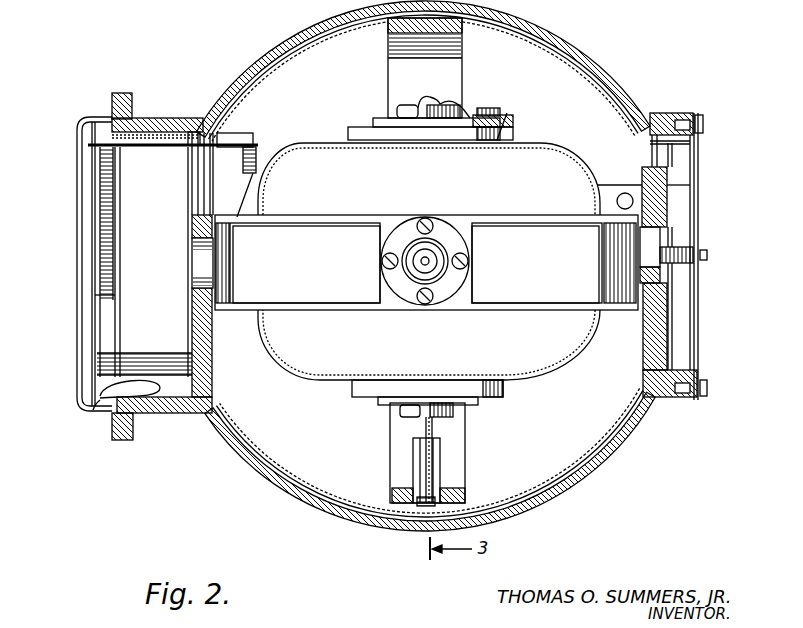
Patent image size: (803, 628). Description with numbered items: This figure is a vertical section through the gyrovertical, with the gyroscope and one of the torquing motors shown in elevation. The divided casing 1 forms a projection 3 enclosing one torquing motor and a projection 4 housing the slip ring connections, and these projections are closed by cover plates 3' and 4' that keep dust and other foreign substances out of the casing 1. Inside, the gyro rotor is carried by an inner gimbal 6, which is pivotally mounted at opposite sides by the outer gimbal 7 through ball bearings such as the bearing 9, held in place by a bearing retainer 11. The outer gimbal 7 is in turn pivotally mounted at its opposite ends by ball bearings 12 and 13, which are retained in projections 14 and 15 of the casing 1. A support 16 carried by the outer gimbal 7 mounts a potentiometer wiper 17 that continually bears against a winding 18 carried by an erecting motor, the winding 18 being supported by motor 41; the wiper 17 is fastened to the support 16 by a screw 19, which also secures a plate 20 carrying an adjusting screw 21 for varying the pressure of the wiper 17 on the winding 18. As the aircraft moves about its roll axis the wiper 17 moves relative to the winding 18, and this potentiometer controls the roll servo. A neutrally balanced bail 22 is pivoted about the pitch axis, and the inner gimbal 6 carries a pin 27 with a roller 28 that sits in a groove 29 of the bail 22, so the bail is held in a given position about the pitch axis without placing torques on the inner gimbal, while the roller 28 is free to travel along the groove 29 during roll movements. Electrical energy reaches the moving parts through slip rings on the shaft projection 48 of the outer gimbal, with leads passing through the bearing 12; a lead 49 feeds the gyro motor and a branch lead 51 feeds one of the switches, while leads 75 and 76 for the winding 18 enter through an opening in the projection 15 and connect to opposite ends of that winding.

The divided casing 1 is at (548, 24).
The projection 3 is at (162, 271).
The cover plate 3' is at (75, 264).
The projection 4 is at (675, 236).
The cover plate 4' is at (696, 256).
The inner gimbal 6 is at (570, 160).
The outer gimbal 7 is at (607, 300).
The ball bearing 9 is at (425, 272).
The bearing retainer 11 is at (443, 297).
The ball bearing 12 is at (651, 237).
The ball bearing 13 is at (206, 258).
The projection 14 is at (652, 348).
The projection 15 is at (205, 357).
The support 16 is at (257, 152).
The potentiometer wiper 17 is at (153, 143).
The winding 18 is at (103, 178).
The screw 19 is at (251, 134).
The plate 20 is at (208, 133).
The adjusting screw 21 is at (190, 133).
The bail 22 is at (463, 28).
The pin 27 is at (427, 454).
The roller 28 is at (422, 504).
The groove 29 is at (418, 473).
The motor 41 is at (128, 232).
The shaft projection 48 is at (690, 252).
The lead 49 is at (507, 125).
The branch lead 51 is at (500, 130).
The lead 75 is at (100, 400).
The lead 76 is at (100, 386).